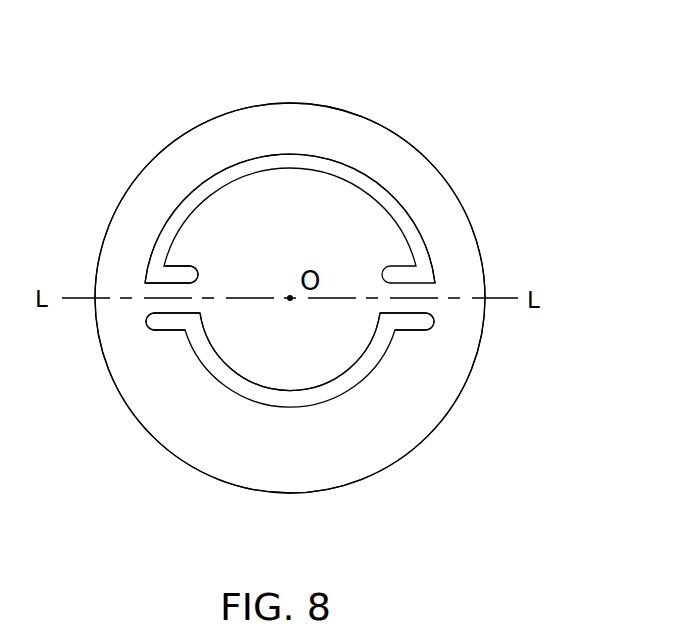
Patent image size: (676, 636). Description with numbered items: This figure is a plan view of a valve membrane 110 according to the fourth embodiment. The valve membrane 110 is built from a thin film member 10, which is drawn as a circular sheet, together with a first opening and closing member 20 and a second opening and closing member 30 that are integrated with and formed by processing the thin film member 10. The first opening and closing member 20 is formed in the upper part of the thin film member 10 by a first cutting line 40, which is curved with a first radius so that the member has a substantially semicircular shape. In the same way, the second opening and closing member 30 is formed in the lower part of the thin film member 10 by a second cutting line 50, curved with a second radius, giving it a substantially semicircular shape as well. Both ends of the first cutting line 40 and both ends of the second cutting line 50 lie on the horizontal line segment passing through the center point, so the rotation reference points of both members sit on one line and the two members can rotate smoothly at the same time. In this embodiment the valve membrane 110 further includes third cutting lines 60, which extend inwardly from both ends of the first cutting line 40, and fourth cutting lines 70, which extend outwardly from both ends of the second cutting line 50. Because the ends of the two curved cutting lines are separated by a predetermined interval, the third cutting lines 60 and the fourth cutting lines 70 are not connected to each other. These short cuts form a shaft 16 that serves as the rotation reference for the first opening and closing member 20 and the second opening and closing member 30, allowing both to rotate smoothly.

The valve membrane 110 is at (440, 130).
The thin film member 10 is at (378, 140).
The first opening and closing member 20 is at (373, 220).
The second opening and closing member 30 is at (325, 353).
The first cutting line 40 is at (168, 233).
The second cutting line 50 is at (272, 400).
The third cutting lines 60 is at (163, 289).
The fourth cutting lines 70 is at (162, 320).
The shaft 16 is at (418, 289).